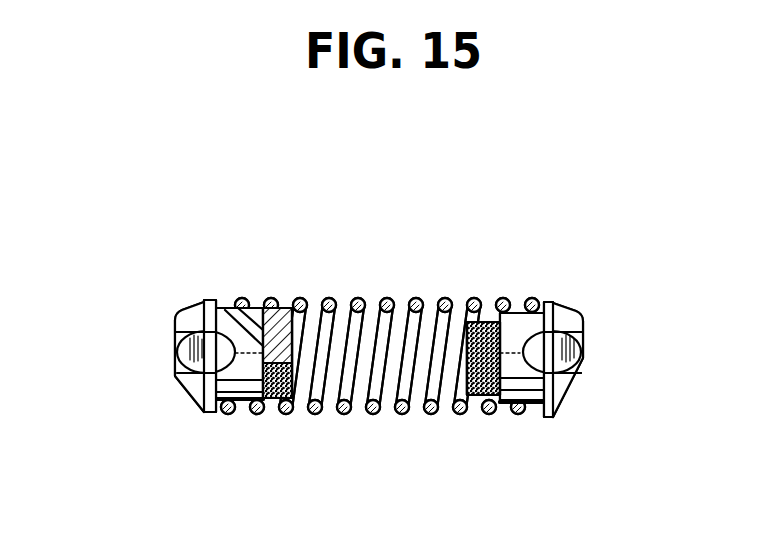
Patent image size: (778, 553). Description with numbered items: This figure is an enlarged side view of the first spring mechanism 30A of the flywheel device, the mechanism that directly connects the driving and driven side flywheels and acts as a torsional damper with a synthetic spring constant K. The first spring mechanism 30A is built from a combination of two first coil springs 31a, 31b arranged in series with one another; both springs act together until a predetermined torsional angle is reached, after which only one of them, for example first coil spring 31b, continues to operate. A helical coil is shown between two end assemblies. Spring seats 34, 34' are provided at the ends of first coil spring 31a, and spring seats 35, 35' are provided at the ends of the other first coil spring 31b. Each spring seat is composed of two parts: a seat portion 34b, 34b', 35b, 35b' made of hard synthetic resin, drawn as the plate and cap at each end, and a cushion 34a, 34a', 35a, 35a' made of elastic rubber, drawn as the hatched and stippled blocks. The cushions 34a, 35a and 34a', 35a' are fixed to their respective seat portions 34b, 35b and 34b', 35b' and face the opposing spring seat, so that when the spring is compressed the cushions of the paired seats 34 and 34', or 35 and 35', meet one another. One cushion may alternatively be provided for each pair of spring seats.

The first spring mechanism 30A is at (217, 192).
The first coil spring 31a is at (356, 300).
The first coil spring 31b is at (380, 324).
The spring seat 34 is at (229, 315).
The spring seat 35 is at (229, 315).
The cushion 34a is at (351, 301).
The cushion 35a is at (351, 301).
The seat portion 34b is at (149, 307).
The seat portion 35b is at (149, 307).
The spring seat 34' is at (481, 411).
The spring seat 35' is at (481, 411).
The cushion 34a' is at (401, 398).
The cushion 35a' is at (401, 398).
The seat portion 34b' is at (589, 389).
The seat portion 35b' is at (589, 389).